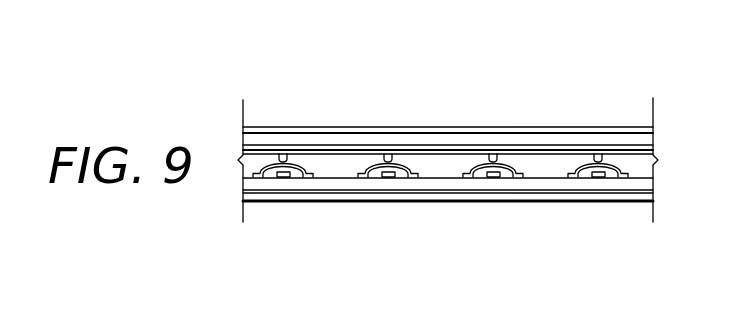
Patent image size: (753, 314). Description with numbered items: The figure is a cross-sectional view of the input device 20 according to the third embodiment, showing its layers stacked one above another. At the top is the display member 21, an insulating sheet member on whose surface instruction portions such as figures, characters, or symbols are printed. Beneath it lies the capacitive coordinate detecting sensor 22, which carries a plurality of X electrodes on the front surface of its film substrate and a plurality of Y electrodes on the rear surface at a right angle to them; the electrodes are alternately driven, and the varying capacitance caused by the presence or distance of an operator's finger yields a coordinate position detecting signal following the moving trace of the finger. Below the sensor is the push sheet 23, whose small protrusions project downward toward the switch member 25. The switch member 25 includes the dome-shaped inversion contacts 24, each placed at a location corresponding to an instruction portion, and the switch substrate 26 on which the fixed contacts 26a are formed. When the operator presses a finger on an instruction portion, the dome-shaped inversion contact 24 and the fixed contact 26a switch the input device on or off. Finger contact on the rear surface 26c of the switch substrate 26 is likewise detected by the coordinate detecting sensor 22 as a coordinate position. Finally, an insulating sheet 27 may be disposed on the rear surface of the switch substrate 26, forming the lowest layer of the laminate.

The input device 20 is at (441, 148).
The display member 21 is at (585, 130).
The capacitive coordinate detecting sensor 22 is at (521, 138).
The push sheet 23 is at (340, 148).
The dome-shaped inversion contact 24 is at (403, 163).
The switch member 25 is at (443, 183).
The switch substrate 26 is at (297, 185).
The fixed contact 26a is at (363, 180).
The rear surface of the switch substrate 26c is at (532, 190).
The insulating sheet 27 is at (625, 196).